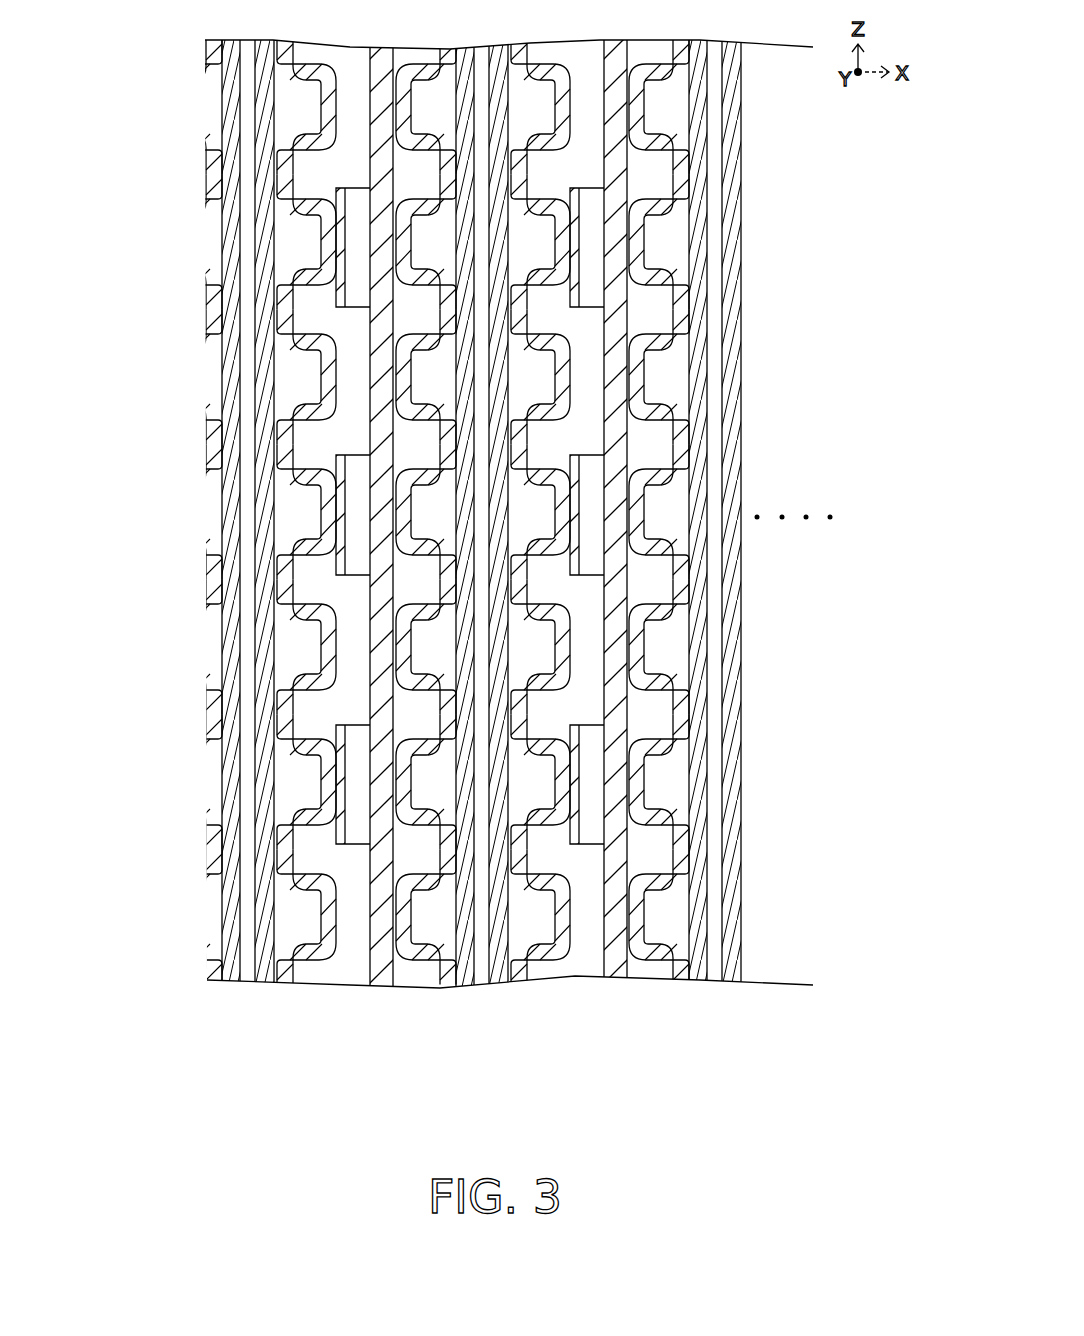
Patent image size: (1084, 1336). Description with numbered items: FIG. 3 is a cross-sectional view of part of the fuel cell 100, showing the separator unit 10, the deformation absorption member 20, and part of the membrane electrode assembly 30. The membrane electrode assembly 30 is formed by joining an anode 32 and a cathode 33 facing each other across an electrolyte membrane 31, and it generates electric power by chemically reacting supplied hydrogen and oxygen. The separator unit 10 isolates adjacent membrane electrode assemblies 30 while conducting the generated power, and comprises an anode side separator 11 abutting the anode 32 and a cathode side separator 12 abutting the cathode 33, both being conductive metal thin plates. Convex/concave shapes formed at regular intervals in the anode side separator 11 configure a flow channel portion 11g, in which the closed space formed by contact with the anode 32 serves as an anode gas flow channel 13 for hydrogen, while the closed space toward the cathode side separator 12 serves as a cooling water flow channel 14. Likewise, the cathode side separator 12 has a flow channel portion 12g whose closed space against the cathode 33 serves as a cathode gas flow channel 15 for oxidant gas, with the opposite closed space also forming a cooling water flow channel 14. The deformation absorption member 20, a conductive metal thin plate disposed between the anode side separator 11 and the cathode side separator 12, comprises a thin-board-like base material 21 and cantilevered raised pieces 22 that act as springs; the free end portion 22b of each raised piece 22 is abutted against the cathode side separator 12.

The fuel cell 100 is at (225, 1114).
The separator unit 10 is at (310, 1078).
The anode side separator 11 is at (404, 958).
The flow channel portion 11g is at (398, 960).
The cathode side separator 12 is at (309, 920).
The flow channel portion 12g is at (313, 983).
The anode gas flow channel 13 is at (430, 380).
The cooling water flow channel 14 is at (413, 308).
The cathode gas flow channel 15 is at (530, 243).
The deformation absorption member 20 is at (468, 1078).
The base material 21 is at (428, 960).
The raised piece 22 is at (438, 965).
The free end portion 22b is at (340, 822).
The membrane electrode assembly 30 is at (190, 1078).
The electrolyte membrane 31 is at (240, 980).
The anode 32 is at (228, 980).
The cathode 33 is at (255, 980).